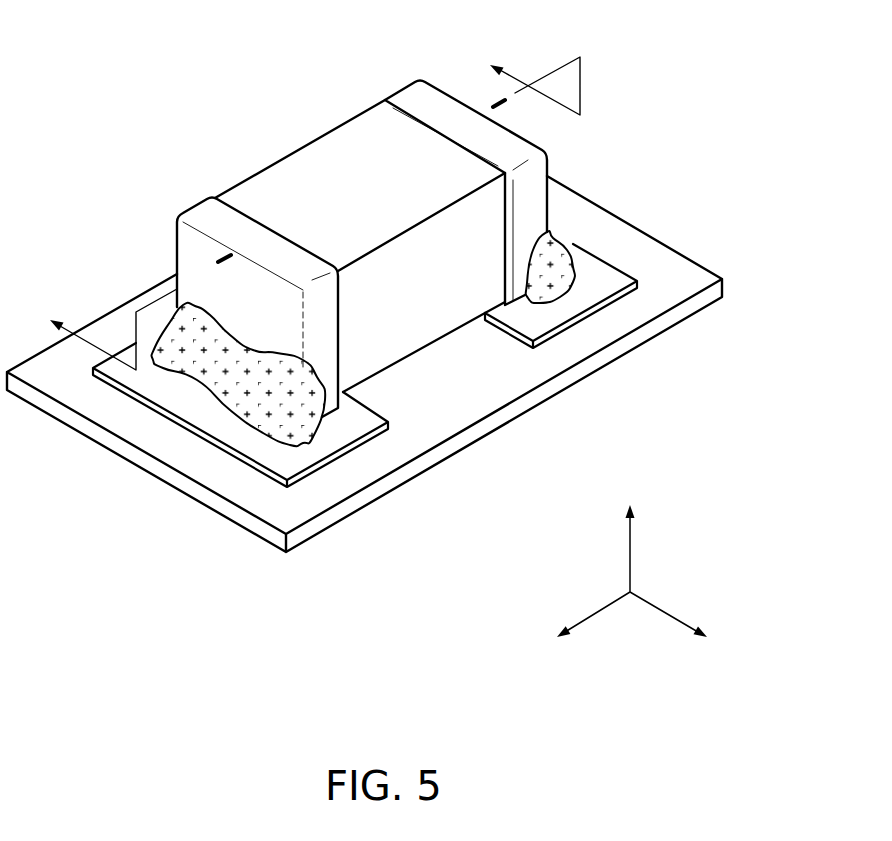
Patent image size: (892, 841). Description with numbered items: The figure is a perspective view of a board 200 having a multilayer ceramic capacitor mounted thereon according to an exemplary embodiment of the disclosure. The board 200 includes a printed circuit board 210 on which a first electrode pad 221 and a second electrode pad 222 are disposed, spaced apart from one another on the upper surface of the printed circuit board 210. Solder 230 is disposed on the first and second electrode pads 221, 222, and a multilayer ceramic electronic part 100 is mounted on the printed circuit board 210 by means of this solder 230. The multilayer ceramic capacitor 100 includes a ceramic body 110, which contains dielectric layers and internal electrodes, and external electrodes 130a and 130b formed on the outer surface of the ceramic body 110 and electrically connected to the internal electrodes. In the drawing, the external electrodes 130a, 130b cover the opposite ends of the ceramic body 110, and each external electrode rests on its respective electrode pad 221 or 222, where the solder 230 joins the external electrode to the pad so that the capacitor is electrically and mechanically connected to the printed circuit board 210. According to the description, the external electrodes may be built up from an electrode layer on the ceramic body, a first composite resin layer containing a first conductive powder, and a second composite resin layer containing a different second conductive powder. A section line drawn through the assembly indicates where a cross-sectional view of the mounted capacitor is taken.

The board having a multilayer ceramic capacitor mounted thereon 200 is at (135, 48).
The multilayer ceramic capacitor 100 is at (344, 220).
The ceramic body 110 is at (313, 173).
The external electrode 130a is at (209, 220).
The external electrode 130b is at (408, 107).
The printed circuit board 210 is at (485, 400).
The first electrode pad 221 is at (333, 435).
The second electrode pad 222 is at (580, 290).
The solder 230 is at (220, 368).